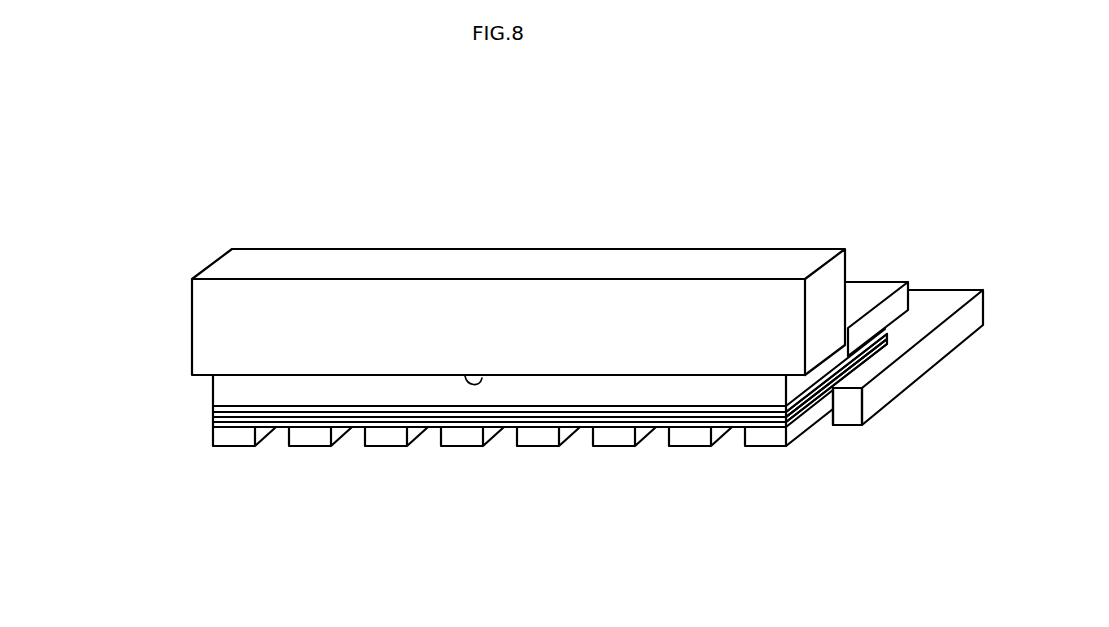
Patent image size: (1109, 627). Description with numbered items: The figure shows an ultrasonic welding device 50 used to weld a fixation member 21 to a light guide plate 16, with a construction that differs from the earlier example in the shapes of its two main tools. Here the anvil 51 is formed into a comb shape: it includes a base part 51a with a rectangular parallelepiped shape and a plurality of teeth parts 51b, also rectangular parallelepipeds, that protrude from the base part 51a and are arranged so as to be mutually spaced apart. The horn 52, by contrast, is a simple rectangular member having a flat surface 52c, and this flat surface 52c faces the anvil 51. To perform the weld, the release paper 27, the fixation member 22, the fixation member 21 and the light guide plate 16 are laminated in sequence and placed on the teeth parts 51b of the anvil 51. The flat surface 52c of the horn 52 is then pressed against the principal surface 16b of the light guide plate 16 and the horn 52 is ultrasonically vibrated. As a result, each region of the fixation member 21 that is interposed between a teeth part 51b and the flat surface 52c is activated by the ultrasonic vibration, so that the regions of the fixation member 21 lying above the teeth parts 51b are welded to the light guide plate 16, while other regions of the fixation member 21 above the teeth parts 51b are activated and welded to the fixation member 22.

The light guide plate 16 is at (908, 310).
The principal surface 16b is at (850, 290).
The fixation member 21 is at (655, 410).
The fixation member 22 is at (825, 405).
The release paper 27 is at (800, 417).
The ultrasonic welding device 50 is at (117, 223).
The anvil 51 is at (502, 453).
The base part 51a is at (923, 362).
The teeth parts 51b is at (236, 447).
The horn 52 is at (481, 296).
The flat surface 52c is at (482, 384).